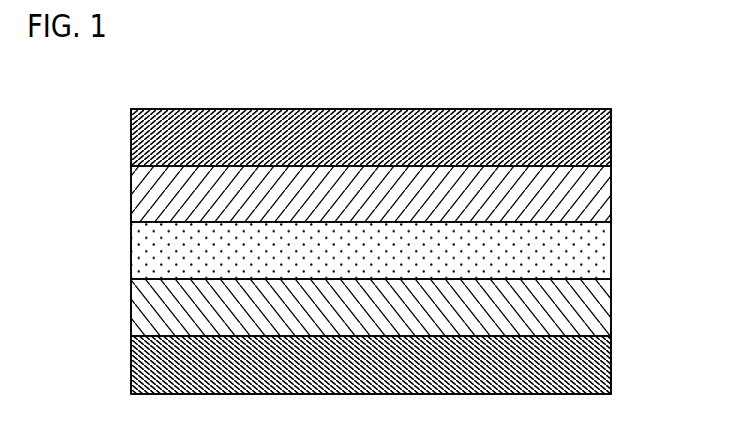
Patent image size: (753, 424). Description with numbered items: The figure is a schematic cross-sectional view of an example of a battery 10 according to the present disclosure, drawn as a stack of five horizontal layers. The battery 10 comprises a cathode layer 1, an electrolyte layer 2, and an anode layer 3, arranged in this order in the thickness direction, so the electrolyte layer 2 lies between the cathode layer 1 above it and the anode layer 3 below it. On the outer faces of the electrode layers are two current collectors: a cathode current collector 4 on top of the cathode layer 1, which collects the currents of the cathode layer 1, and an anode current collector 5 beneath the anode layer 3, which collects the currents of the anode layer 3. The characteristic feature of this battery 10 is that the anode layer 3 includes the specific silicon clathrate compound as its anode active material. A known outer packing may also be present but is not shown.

The battery 10 is at (581, 96).
The cathode current collector 4 is at (599, 135).
The cathode layer 1 is at (598, 195).
The electrolyte layer 2 is at (598, 250).
The anode layer 3 is at (598, 307).
The anode current collector 5 is at (598, 362).